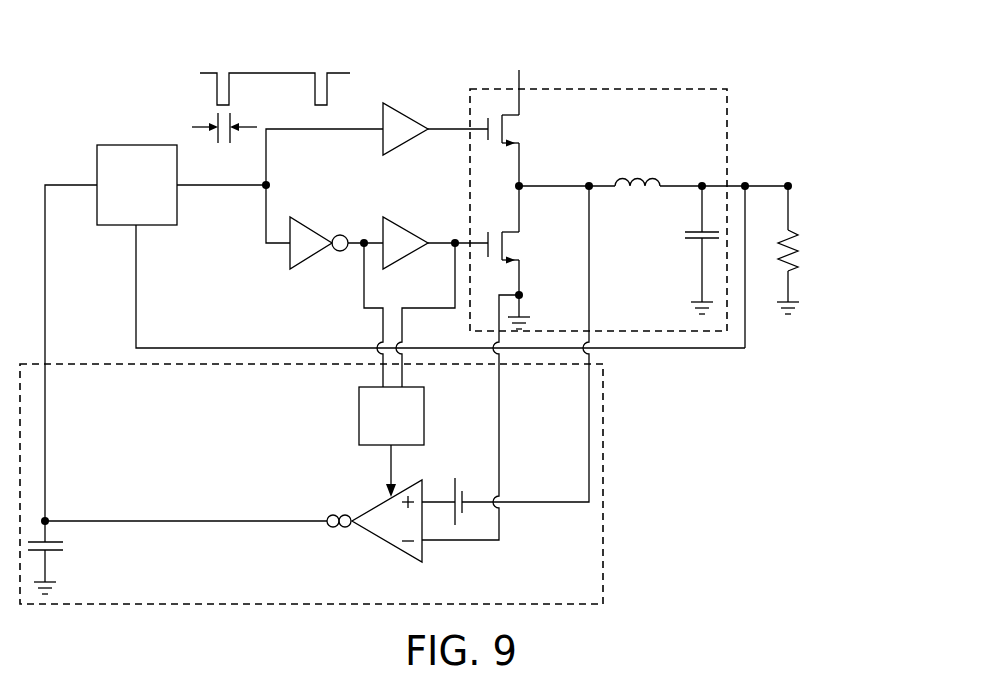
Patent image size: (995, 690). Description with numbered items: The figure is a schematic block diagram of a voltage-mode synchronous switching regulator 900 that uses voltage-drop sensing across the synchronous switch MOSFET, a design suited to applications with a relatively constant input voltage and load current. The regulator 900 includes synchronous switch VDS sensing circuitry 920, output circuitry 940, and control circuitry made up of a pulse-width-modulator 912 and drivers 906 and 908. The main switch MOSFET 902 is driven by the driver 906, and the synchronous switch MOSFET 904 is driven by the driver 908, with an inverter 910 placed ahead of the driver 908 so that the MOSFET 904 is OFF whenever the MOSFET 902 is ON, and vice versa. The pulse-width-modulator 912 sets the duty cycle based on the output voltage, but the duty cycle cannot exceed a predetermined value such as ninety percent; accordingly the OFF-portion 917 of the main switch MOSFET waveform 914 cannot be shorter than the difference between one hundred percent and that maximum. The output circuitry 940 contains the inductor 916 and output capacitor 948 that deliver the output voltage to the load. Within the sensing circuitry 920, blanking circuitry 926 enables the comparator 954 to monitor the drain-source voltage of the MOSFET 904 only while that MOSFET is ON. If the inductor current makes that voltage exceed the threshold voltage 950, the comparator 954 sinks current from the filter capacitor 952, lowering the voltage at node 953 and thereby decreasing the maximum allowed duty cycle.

The voltage-mode synchronous switching regulator 900 is at (660, 42).
The main switch MOSFET 902 is at (506, 128).
The synchronous switch MOSFET 904 is at (506, 252).
The driver 906 is at (403, 112).
The driver 908 is at (404, 226).
The inverter 910 is at (300, 226).
The pulse-width-modulator 912 is at (103, 145).
The main switch MOSFET waveform 914 is at (287, 58).
The output inductor 916 is at (640, 174).
The OFF-portion 917 is at (216, 122).
The synchronous switch VDS sensing circuitry 920 is at (603, 440).
The blanking circuitry 926 is at (359, 418).
The output circuitry 940 is at (727, 152).
The output capacitor 948 is at (593, 190).
The threshold voltage 950 is at (455, 478).
The filter capacitor 952 is at (63, 550).
The node 953 is at (47, 519).
The comparator 954 is at (386, 543).